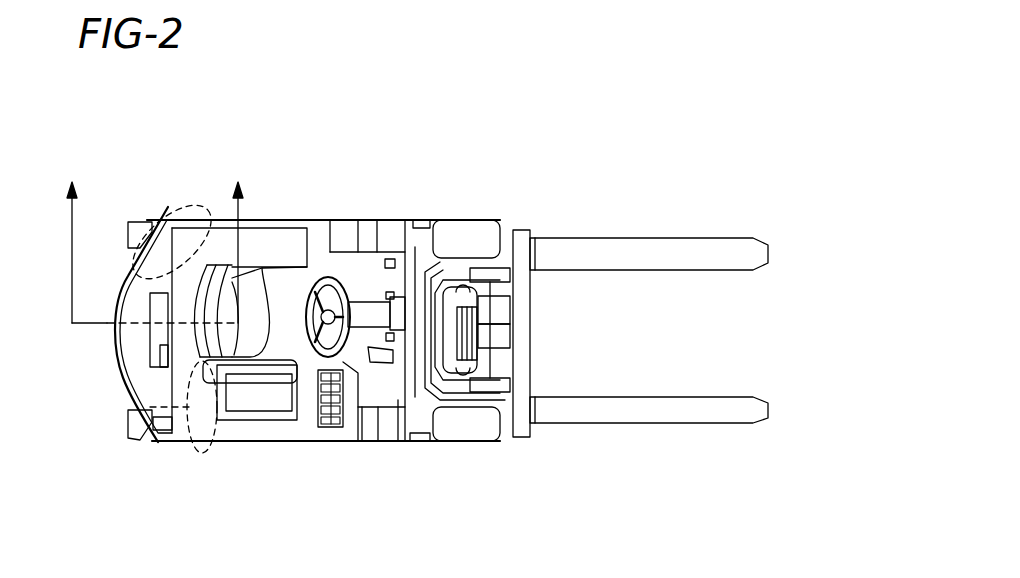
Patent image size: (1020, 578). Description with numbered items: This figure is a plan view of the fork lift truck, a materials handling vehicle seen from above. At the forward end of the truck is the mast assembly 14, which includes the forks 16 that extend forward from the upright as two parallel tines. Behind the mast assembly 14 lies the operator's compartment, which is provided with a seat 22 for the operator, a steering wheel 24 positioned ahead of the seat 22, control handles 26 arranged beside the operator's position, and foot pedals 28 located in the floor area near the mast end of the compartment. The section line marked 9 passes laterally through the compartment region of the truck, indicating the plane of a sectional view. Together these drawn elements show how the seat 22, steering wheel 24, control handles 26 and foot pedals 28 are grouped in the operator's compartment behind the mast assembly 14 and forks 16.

The section line 9- 9 is at (154, 233).
The mast assembly 14 is at (533, 327).
The forks 16 is at (620, 248).
The seat 22 is at (253, 298).
The steering wheel 24 is at (328, 278).
The control handles 26 is at (340, 382).
The foot pedals 28 is at (392, 268).